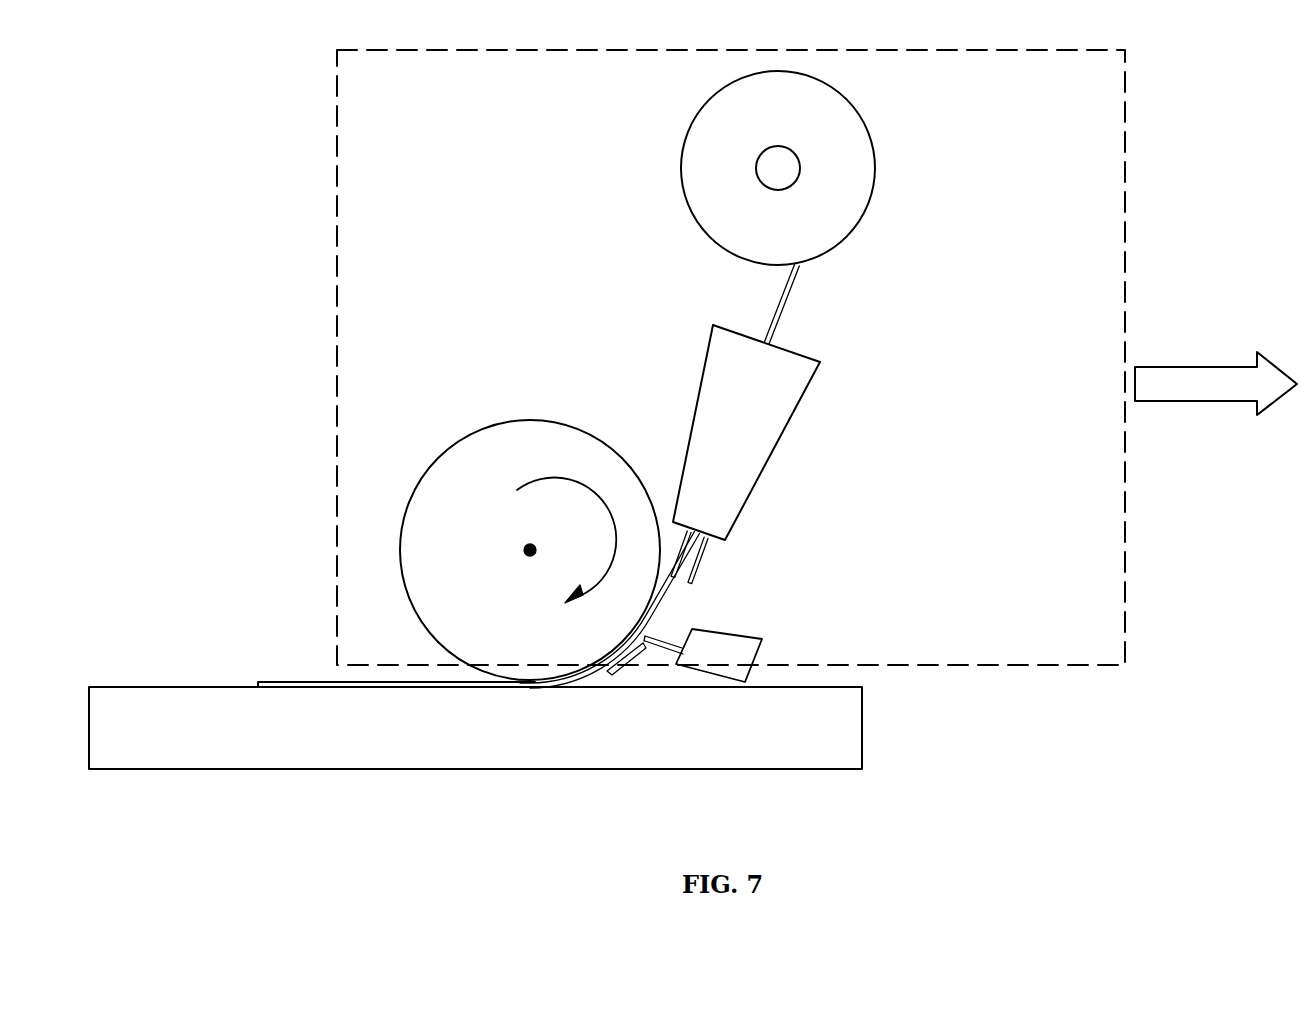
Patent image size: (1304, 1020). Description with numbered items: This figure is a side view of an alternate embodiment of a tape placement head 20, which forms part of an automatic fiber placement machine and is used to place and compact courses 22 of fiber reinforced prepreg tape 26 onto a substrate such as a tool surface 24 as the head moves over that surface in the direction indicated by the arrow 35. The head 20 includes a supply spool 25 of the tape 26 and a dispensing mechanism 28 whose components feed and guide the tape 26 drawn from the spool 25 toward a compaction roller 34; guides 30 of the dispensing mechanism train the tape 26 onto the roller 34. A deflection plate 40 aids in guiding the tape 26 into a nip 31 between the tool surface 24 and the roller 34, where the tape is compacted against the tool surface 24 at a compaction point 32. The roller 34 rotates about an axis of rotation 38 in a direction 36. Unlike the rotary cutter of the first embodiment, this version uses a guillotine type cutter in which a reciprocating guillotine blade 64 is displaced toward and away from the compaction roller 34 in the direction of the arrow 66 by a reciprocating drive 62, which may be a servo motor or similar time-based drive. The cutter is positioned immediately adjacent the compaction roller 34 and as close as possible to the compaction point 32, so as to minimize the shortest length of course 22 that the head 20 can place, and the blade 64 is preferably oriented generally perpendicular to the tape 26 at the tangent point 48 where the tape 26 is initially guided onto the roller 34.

The tape placement head 20 is at (337, 218).
The courses 22 is at (290, 681).
The tool surface 24 is at (165, 687).
The supply spool 25 is at (843, 158).
The prepreg tape 26 is at (795, 302).
The dispensing mechanism 28 is at (768, 400).
The guides 30 is at (697, 567).
The nip 31 is at (595, 677).
The compaction point 32 is at (530, 690).
The compaction roller 34 is at (475, 467).
The arrow 35 is at (1196, 387).
The direction of rotation of the roller 36 is at (427, 537).
The axis of rotation 38 is at (530, 544).
The deflection plate 40 is at (628, 666).
The tangent point 48 is at (628, 627).
The reciprocating drive 62 is at (753, 645).
The reciprocating guillotine blade 64 is at (662, 655).
The arrow 66 is at (655, 627).